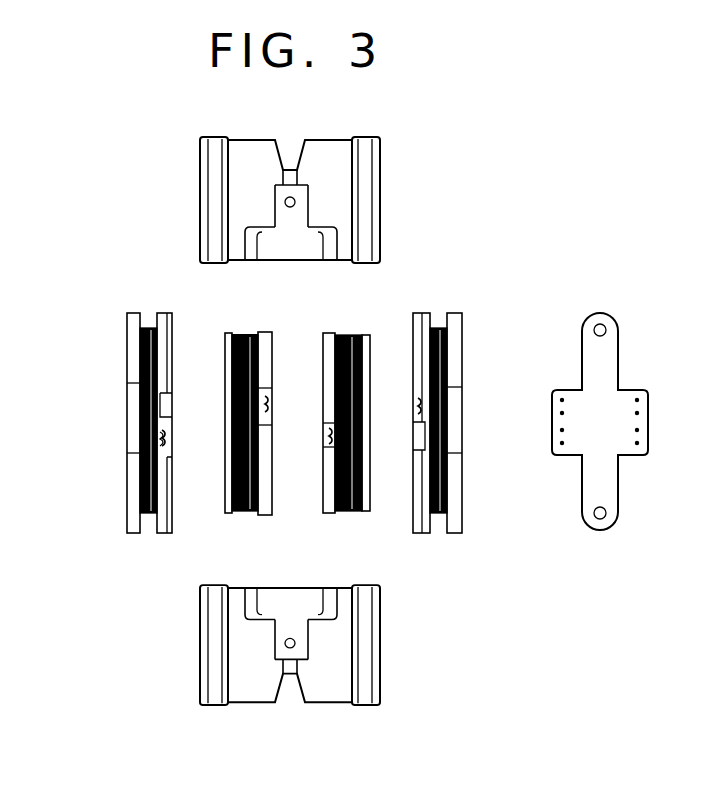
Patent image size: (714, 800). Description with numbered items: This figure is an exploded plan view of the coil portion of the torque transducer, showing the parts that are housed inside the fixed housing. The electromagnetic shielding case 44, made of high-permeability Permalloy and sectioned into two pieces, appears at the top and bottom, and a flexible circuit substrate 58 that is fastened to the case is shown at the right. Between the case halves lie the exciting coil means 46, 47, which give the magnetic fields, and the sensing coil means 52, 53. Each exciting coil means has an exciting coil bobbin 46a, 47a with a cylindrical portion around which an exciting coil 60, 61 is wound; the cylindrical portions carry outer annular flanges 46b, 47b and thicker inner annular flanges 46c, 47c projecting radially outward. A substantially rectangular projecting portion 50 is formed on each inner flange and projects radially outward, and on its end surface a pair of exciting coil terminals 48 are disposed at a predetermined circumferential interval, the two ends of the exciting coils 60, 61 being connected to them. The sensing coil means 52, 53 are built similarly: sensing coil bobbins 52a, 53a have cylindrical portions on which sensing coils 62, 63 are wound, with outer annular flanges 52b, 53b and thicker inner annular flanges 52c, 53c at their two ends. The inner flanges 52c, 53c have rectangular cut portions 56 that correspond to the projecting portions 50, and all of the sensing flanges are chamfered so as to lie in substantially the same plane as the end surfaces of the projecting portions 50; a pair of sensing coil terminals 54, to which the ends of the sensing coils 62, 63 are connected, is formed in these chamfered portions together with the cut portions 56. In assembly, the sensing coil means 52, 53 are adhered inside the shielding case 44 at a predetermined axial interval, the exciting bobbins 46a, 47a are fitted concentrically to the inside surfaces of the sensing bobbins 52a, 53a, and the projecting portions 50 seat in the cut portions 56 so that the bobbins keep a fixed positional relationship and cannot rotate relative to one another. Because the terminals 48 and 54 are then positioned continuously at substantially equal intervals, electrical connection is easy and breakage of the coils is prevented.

The electromagnetic shielding case 44 is at (378, 186).
The exciting coil means 46 is at (245, 513).
The exciting coil bobbin 46a is at (225, 490).
The outer annular flange 46b is at (224, 392).
The inner annular flange 46c is at (268, 506).
The exciting coil means 47 is at (368, 332).
The exciting coil bobbin 47a is at (331, 332).
The outer annular flange 47b is at (371, 356).
The inner annular flange 47c is at (330, 513).
The exciting coil terminals 48 is at (326, 426).
The projecting portion 50 is at (268, 384).
The sensing coil means 52 is at (126, 323).
The sensing coil bobbin 52a is at (125, 505).
The outer annular flange 52b is at (133, 473).
The inner annular flange 52c is at (165, 527).
The sensing coil means 53 is at (464, 332).
The sensing coil bobbin 53a is at (466, 506).
The outer annular flange 53b is at (463, 427).
The inner annular flange 53c is at (421, 534).
The sensing coil terminals 54 is at (167, 434).
The cut portion 56 is at (166, 313).
The flexible circuit substrate 58 is at (593, 473).
The exciting coil 60 is at (247, 334).
The exciting coil 61 is at (350, 513).
The sensing coil 62 is at (146, 356).
The sensing coil 63 is at (452, 368).